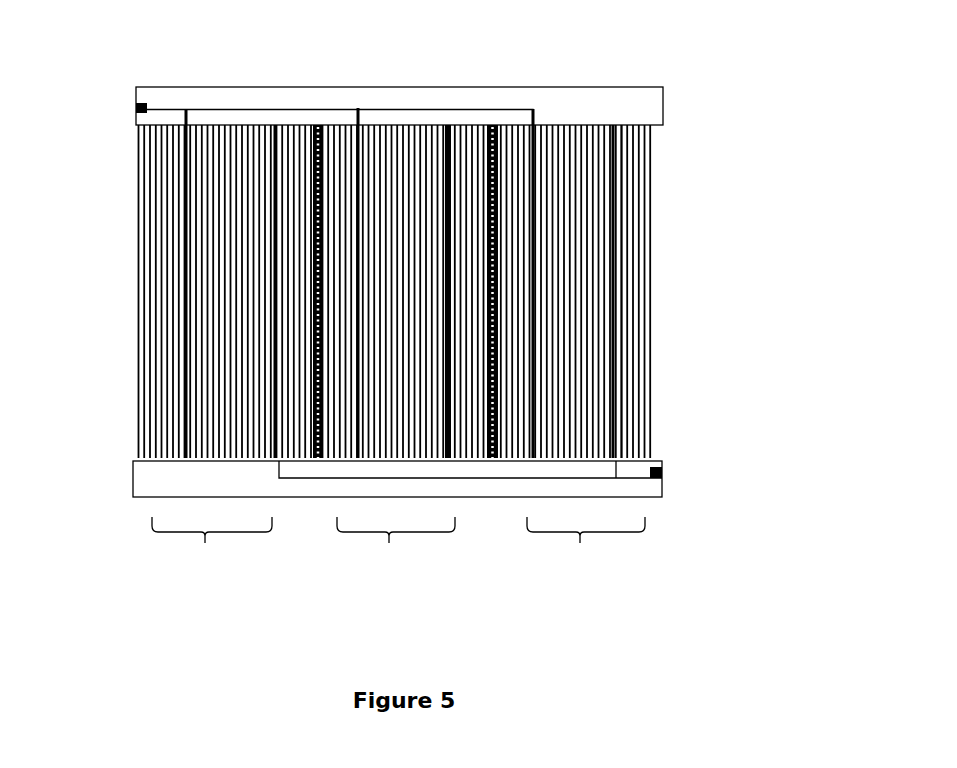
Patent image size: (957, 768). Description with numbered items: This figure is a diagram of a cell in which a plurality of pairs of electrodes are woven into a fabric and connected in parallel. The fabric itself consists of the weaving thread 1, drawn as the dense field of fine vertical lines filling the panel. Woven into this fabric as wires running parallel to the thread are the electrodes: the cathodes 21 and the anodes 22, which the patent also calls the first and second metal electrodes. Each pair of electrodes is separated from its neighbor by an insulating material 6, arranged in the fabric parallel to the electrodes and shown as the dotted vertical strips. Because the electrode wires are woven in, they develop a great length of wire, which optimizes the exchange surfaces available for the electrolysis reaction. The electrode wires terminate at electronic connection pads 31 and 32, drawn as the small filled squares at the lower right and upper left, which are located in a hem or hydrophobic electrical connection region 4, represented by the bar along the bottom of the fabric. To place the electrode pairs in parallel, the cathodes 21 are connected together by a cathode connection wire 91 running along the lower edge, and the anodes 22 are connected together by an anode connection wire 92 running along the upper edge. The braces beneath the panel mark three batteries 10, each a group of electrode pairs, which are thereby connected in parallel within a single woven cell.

The weaving thread 1 is at (424, 153).
The insulating material 6 is at (504, 158).
The metal electrode Metal 1 21 is at (634, 233).
The metal electrode Metal 2 22 is at (548, 358).
The electronic connection pad 31 is at (672, 475).
The electronic connection pad 32 is at (128, 113).
The hydrophobic electrical connection region 4 is at (142, 486).
The cathode connection wire 91 is at (639, 490).
The anode connection wire 92 is at (206, 100).
The battery 10 is at (398, 557).